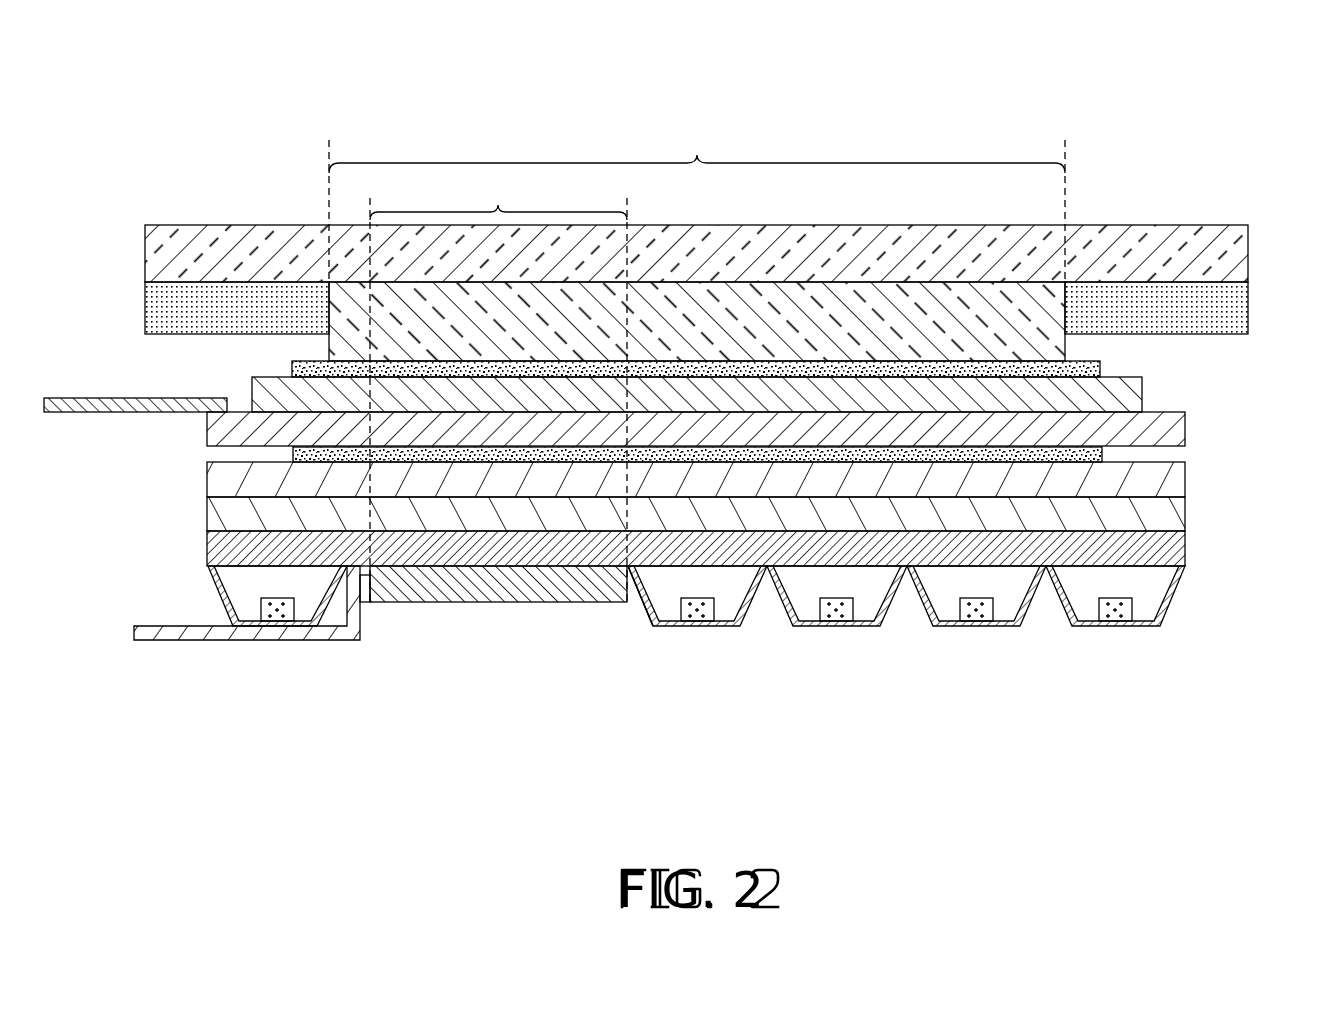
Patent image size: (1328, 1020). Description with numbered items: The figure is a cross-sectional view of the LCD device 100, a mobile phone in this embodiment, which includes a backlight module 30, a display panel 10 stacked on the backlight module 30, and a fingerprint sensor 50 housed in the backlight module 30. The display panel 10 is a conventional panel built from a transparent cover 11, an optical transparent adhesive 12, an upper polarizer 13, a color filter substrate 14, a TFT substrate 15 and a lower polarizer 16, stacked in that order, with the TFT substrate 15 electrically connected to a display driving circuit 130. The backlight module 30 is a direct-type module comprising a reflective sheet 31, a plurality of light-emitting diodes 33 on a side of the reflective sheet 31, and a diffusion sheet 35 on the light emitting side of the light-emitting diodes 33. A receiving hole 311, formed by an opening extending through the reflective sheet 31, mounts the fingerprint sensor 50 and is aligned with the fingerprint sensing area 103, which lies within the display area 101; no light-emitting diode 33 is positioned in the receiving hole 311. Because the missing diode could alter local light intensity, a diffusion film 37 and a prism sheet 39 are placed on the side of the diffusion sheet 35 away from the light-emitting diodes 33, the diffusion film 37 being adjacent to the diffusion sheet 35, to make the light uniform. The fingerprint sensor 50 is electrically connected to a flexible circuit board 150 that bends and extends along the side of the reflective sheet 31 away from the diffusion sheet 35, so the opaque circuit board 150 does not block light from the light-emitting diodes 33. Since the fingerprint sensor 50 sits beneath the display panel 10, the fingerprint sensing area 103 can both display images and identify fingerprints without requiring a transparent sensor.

The LCD device 100 is at (722, 82).
The display panel 10 is at (672, 357).
The display area 101 is at (697, 197).
The fingerprint sensing area 103 is at (498, 386).
The transparent cover 11 is at (163, 258).
The optical transparent adhesive 12 is at (345, 315).
The upper polarizer 13 is at (297, 363).
The color filter substrate 14 is at (263, 400).
The display driving circuit 130 is at (102, 407).
The TFT substrate 15 is at (197, 425).
The lower polarizer 16 is at (292, 452).
The backlight module 30 is at (710, 580).
The prism sheet 39 is at (215, 483).
The diffusion film 37 is at (230, 518).
The diffusion sheet 35 is at (230, 550).
The fingerprint sensor 50 is at (530, 590).
The circuit board 150 is at (195, 630).
The reflective sheet 31 is at (742, 618).
The receiving hole 311 is at (638, 602).
The light-emitting diodes 33 is at (705, 612).